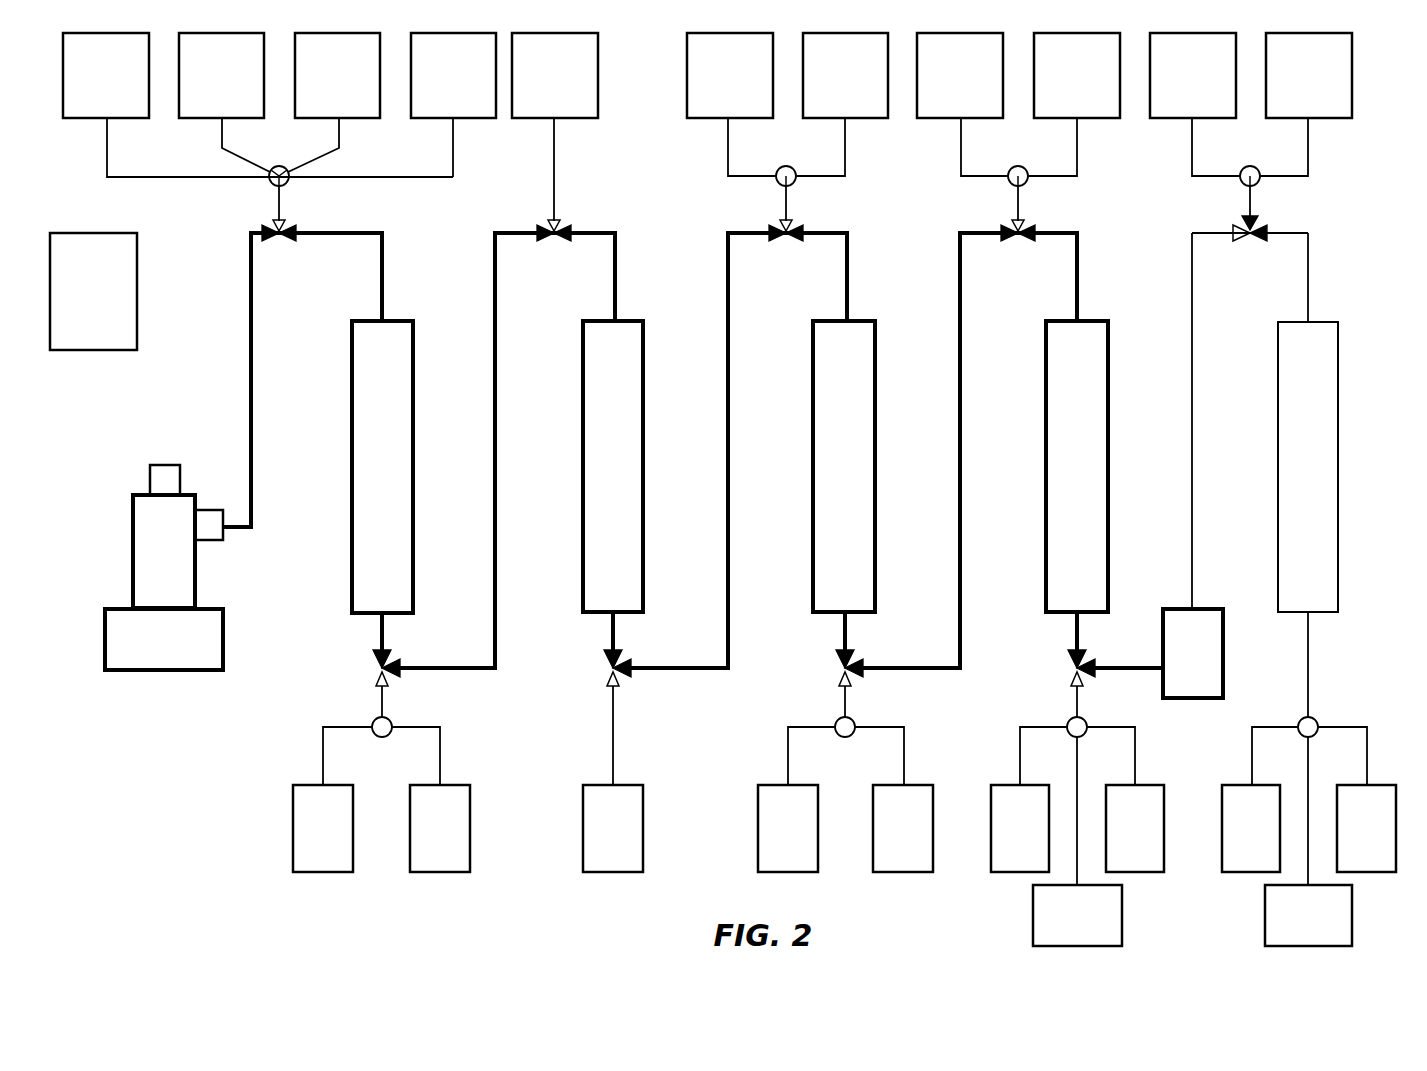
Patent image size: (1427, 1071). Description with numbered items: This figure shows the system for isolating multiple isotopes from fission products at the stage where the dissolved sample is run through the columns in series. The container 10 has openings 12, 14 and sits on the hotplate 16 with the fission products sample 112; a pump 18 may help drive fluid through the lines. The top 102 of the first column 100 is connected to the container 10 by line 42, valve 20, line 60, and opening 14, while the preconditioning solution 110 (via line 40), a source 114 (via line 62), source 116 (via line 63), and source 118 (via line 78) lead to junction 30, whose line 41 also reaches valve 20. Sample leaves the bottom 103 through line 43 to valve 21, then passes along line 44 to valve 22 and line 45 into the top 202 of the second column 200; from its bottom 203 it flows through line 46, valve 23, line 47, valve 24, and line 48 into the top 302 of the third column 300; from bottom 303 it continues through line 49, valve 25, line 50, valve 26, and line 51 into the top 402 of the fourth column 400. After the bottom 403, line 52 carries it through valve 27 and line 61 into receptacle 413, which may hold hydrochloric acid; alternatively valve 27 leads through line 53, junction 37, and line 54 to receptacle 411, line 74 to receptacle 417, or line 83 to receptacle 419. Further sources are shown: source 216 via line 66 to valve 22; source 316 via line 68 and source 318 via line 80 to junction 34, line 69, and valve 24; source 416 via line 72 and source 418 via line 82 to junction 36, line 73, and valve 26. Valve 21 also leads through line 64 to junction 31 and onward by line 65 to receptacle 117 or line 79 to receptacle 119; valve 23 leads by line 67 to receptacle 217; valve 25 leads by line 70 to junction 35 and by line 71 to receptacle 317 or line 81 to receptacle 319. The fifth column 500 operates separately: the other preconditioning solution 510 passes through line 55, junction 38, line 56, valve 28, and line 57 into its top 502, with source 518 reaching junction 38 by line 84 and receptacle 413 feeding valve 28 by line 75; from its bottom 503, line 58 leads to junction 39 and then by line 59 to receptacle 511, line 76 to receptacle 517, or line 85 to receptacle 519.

The container 10 is at (133, 549).
The accessible opening 12 is at (168, 460).
The accessible opening 14 is at (239, 541).
The hotplate 16 is at (164, 639).
The pump 18 is at (93, 291).
The valve 20 is at (316, 247).
The valve 21 is at (367, 671).
The valve 22 is at (555, 247).
The valve 23 is at (598, 671).
The valve 24 is at (787, 247).
The valve 25 is at (830, 671).
The valve 26 is at (1018, 247).
The valve 27 is at (1062, 671).
The valve 28 is at (1250, 247).
The junction 30 is at (280, 165).
The junction 31 is at (379, 741).
The junction 34 is at (786, 165).
The junction 35 is at (844, 741).
The junction 36 is at (1018, 165).
The junction 37 is at (1062, 740).
The junction 38 is at (1250, 165).
The junction 39 is at (1294, 740).
The line 40 is at (185, 177).
The line 41 is at (279, 203).
The line 42 is at (382, 262).
The line 43 is at (380, 635).
The line 44 is at (495, 418).
The line 45 is at (615, 262).
The line 46 is at (611, 635).
The line 47 is at (728, 418).
The line 48 is at (847, 262).
The line 49 is at (843, 635).
The line 50 is at (960, 418).
The line 51 is at (1077, 262).
The line 52 is at (1075, 635).
The line 53 is at (1077, 702).
The line 54 is at (1077, 763).
The line 55 is at (1192, 133).
The line 56 is at (1250, 203).
The line 57 is at (1308, 262).
The line 58 is at (1308, 662).
The line 59 is at (1308, 763).
The line 60 is at (251, 420).
The line 61 is at (1130, 670).
The first buffer line 62 is at (222, 133).
The line 63 is at (339, 142).
The line 64 is at (382, 700).
The line 65 is at (323, 752).
The line 66 is at (554, 170).
The line 67 is at (613, 700).
The line 68 is at (728, 133).
The line 69 is at (786, 203).
The line 70 is at (845, 700).
The line 71 is at (788, 752).
The line 72 is at (961, 133).
The line 73 is at (1018, 203).
The line 74 is at (1020, 752).
The line 75 is at (1192, 418).
The line 76 is at (1252, 768).
The line 78 is at (453, 145).
The line 79 is at (440, 752).
The line 80 is at (845, 142).
The line 81 is at (904, 762).
The line 82 is at (1077, 142).
The line 83 is at (1135, 750).
The line 84 is at (1308, 142).
The line 85 is at (1367, 750).
The first column 100 is at (382, 467).
The top of first column 102 is at (395, 321).
The bottom of first column 103 is at (395, 613).
The preconditioning solution 110 is at (106, 75).
The fission products sample 112 is at (164, 551).
The first buffer source 114 is at (221, 75).
The source 116 is at (337, 75).
The receptacle 117 is at (323, 828).
The source 118 is at (453, 75).
The receptacle 119 is at (440, 828).
The second column 200 is at (613, 466).
The top of second column 202 is at (626, 321).
The bottom of second column 203 is at (626, 612).
The source 216 is at (555, 75).
The receptacle 217 is at (613, 828).
The third column 300 is at (844, 466).
The top of third column 302 is at (858, 321).
The bottom of third column 303 is at (858, 612).
The source 316 is at (730, 75).
The receptacle 317 is at (788, 828).
The source 318 is at (845, 75).
The receptacle 319 is at (903, 828).
The fourth column 400 is at (1077, 466).
The top of fourth column 402 is at (1090, 321).
The bottom of fourth column 403 is at (1090, 612).
The receptacle 411 is at (1077, 915).
The receptacle 413 is at (1193, 653).
The source 416 is at (960, 75).
The receptacle 417 is at (1020, 828).
The source 418 is at (1077, 75).
The receptacle 419 is at (1135, 828).
The fifth column 500 is at (1308, 467).
The top of fifth column 502 is at (1320, 322).
The bottom of fifth column 503 is at (1325, 612).
The other preconditioning solution 510 is at (1193, 75).
The receptacle 511 is at (1308, 915).
The receptacle 517 is at (1251, 828).
The source 518 is at (1309, 75).
The receptacle 519 is at (1366, 828).